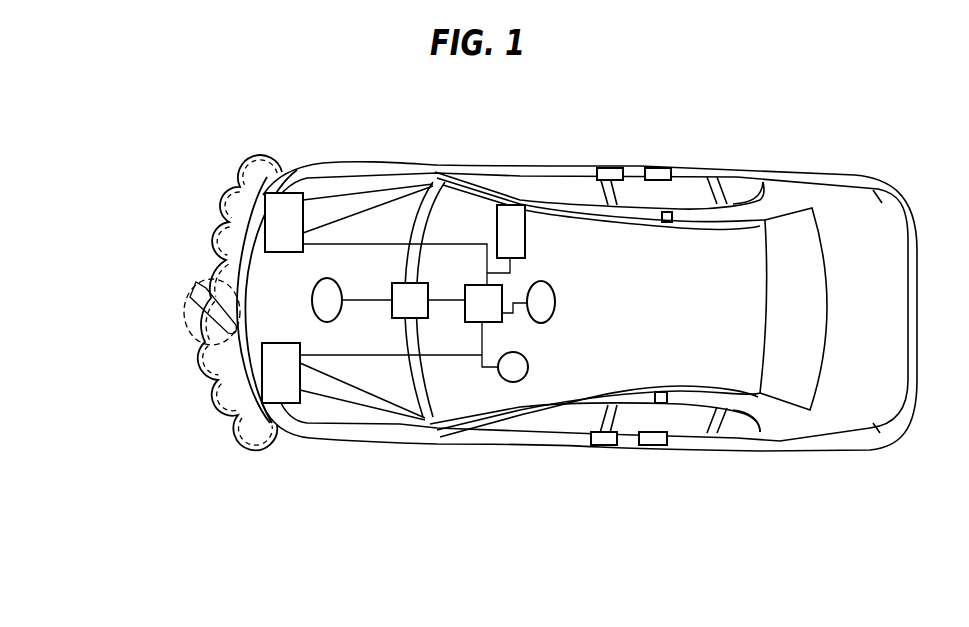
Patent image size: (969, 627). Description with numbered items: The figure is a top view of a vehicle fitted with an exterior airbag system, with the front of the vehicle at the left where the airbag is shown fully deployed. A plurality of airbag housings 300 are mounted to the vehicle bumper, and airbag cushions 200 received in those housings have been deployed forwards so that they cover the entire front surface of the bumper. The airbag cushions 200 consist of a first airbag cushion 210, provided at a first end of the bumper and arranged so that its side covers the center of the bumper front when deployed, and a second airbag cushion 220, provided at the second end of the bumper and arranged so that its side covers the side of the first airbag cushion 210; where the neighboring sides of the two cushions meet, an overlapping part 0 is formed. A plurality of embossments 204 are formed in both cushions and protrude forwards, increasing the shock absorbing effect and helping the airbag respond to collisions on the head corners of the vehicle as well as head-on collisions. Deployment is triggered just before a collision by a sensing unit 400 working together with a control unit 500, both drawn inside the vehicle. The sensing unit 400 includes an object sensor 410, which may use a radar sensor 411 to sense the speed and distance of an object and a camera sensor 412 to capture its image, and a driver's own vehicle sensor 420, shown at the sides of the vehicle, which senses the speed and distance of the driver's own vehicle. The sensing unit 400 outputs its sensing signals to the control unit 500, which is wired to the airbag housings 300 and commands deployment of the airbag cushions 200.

The airbag cushion 200 is at (92, 247).
The embossment 204 is at (223, 187).
The first airbag cushion 210 is at (220, 253).
The second airbag cushion 220 is at (202, 357).
The overlapping part 0 is at (223, 380).
The airbag housing 300 is at (287, 217).
The sensing unit 400 is at (492, 386).
The object sensor 410 is at (433, 420).
The radar sensor 411 is at (323, 313).
The camera sensor 412 is at (543, 323).
The driver's own vehicle sensor 420 is at (631, 353).
The control unit 500 is at (475, 296).